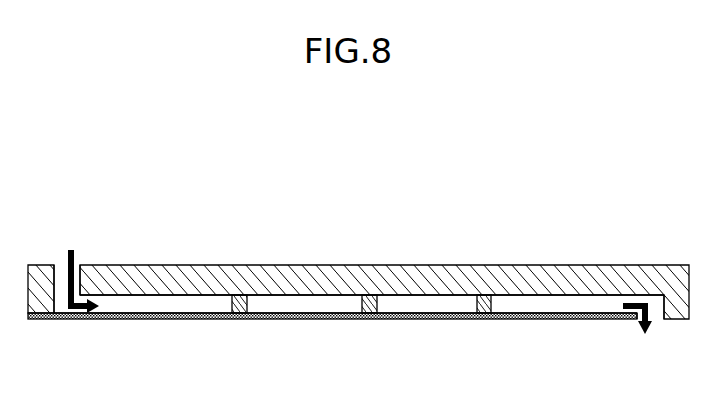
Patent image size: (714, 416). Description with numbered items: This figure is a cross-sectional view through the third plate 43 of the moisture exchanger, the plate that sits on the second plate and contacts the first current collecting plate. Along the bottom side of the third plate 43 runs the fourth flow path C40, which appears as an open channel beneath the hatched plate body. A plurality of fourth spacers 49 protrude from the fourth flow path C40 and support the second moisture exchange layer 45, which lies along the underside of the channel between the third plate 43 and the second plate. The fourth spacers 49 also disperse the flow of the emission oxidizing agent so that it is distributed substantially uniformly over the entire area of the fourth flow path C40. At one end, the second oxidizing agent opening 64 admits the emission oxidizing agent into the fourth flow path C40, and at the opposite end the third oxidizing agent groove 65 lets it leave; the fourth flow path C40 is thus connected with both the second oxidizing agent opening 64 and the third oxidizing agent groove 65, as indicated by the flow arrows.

The third plate 43 is at (303, 283).
The fourth flow path C40 is at (313, 315).
The second moisture exchange layer 45 is at (425, 320).
The fourth spacers 49 is at (237, 318).
The second oxidizing agent opening 64 is at (60, 283).
The third oxidizing agent groove 65 is at (659, 314).